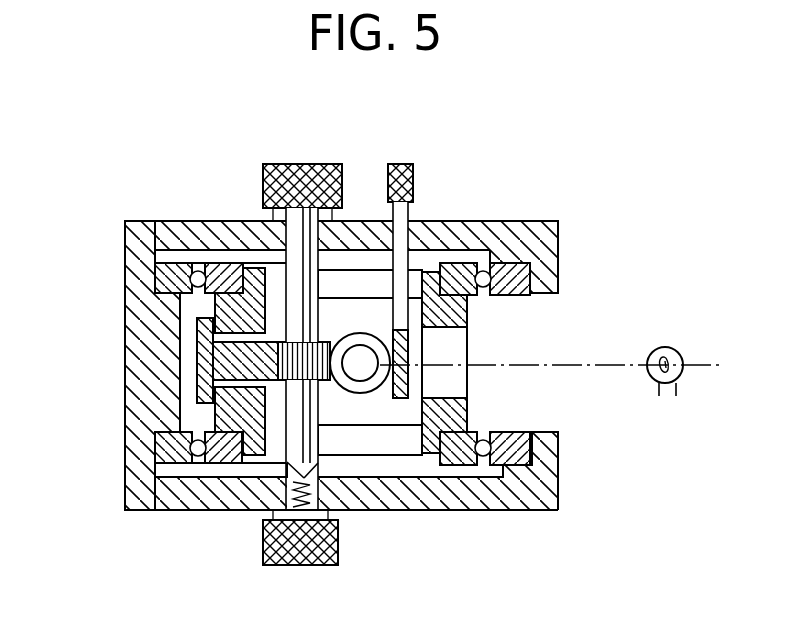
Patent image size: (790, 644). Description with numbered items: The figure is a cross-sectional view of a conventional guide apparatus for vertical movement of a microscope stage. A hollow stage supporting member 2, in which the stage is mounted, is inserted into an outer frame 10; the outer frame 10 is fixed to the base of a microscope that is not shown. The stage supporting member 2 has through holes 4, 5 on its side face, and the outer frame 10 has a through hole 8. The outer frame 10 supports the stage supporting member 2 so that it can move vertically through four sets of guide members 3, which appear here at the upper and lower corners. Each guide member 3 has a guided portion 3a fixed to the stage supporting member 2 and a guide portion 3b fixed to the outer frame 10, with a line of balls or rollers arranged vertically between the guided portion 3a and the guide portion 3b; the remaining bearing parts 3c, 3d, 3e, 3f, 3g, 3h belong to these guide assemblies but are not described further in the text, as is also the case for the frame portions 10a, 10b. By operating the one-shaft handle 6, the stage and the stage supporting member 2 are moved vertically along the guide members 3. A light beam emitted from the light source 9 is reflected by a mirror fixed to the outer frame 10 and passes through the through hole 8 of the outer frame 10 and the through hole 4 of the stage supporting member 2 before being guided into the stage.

The stage supporting member 2 is at (432, 455).
The guide member 3 is at (167, 250).
The guided portion 3a is at (217, 463).
The guide portion 3b is at (163, 462).
The bearing ring 3c is at (470, 468).
The bearing ring 3d is at (522, 433).
The bearing plate 3e is at (227, 265).
The bearing ring 3f is at (150, 260).
The bearing ring 3g is at (480, 262).
The bearing ring 3h is at (536, 262).
The through hole 4 is at (463, 393).
The through hole 5 is at (425, 222).
The one-shaft handle 6 is at (318, 164).
The through hole 8 is at (545, 297).
The light source 9 is at (678, 350).
The outer frame 10 is at (558, 497).
The housing corner 10a is at (537, 513).
The housing side wall 10b is at (123, 487).